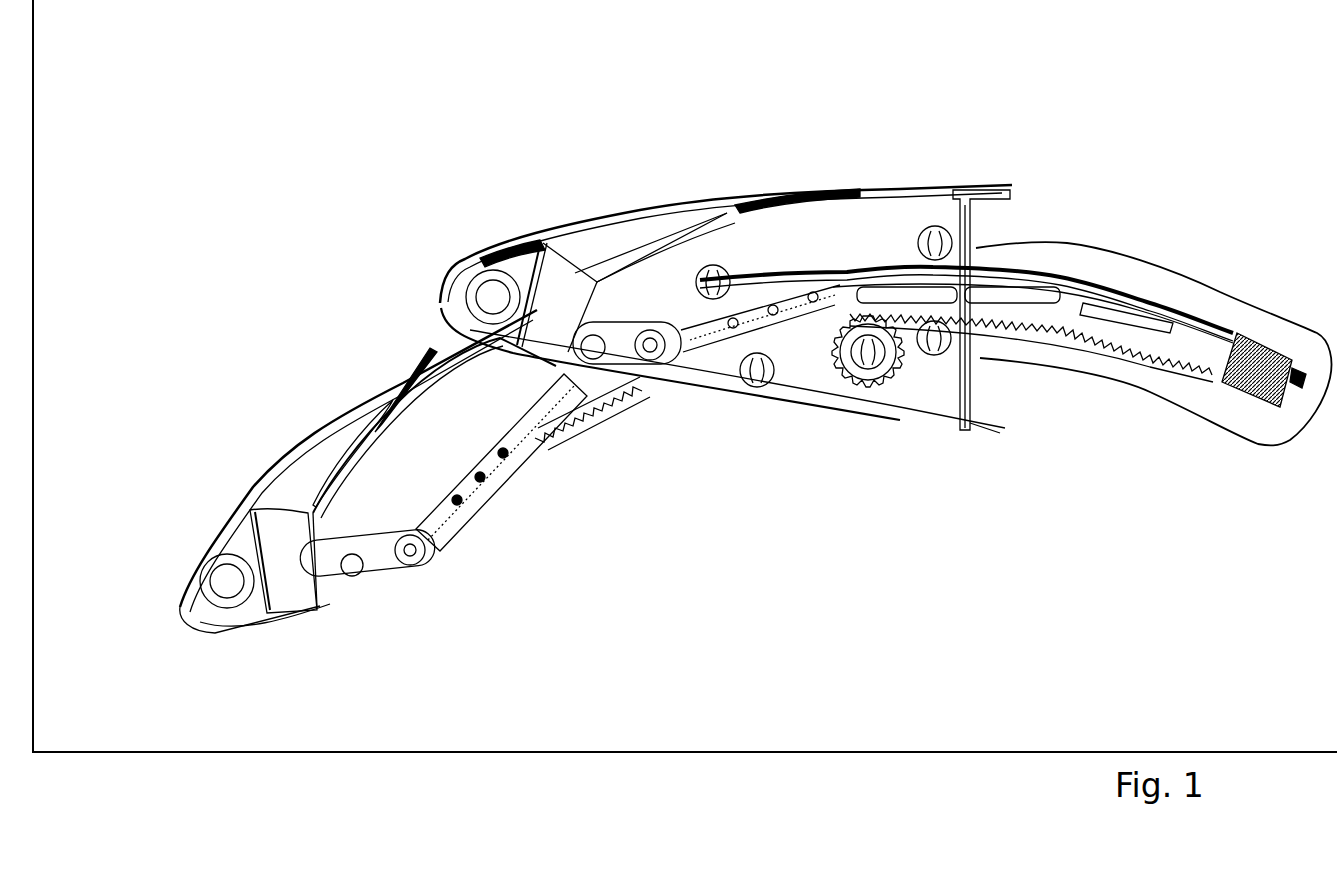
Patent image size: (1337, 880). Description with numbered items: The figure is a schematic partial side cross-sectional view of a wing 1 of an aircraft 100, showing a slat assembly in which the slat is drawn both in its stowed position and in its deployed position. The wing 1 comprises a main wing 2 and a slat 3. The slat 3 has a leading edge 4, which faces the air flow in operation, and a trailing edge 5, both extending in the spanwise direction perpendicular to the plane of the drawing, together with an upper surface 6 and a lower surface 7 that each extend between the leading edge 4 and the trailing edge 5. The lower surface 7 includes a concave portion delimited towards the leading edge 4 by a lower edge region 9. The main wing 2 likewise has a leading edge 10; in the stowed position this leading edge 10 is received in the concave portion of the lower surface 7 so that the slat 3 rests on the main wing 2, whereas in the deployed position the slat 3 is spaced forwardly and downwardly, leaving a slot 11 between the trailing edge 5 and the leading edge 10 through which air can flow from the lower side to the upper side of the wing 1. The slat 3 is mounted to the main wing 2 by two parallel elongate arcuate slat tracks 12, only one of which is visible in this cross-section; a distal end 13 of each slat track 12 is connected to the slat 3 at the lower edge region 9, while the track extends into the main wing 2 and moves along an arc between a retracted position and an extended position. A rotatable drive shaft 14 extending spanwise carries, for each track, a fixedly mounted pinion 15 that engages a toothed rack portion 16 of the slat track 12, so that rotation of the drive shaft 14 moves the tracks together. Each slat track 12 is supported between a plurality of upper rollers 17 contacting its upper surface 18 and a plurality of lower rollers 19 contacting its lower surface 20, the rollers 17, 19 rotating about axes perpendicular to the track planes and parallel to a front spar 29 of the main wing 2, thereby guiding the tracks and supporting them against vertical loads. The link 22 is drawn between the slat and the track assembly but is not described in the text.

The wing 1 is at (892, 98).
The main wing 2 is at (990, 193).
The slat 3 is at (580, 228).
The leading edge 4 is at (446, 296).
The trailing edge 5 is at (875, 195).
The upper surface 6 is at (692, 205).
The lower surface 7 is at (515, 362).
The lower edge region 9 is at (325, 602).
The leading edge 10 is at (608, 298).
The slot 11 is at (553, 300).
The slat track 12 is at (1167, 323).
The distal end 13 is at (470, 551).
The drive shaft 14 is at (858, 390).
The pinion 15 is at (884, 385).
The toothed rack portion 16 is at (1090, 332).
The upper roller 17 is at (720, 276).
The upper surface 18 is at (1098, 287).
The lower roller 19 is at (755, 388).
The lower surface 20 is at (1210, 385).
The link 22 is at (679, 352).
The front spar 29 is at (975, 240).
The aircraft 100 is at (493, 766).